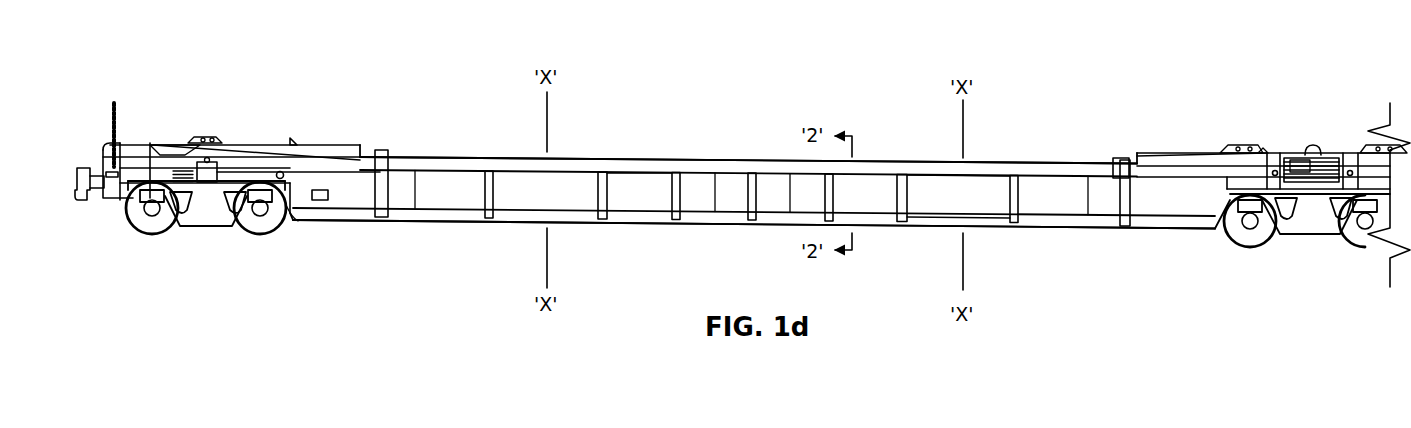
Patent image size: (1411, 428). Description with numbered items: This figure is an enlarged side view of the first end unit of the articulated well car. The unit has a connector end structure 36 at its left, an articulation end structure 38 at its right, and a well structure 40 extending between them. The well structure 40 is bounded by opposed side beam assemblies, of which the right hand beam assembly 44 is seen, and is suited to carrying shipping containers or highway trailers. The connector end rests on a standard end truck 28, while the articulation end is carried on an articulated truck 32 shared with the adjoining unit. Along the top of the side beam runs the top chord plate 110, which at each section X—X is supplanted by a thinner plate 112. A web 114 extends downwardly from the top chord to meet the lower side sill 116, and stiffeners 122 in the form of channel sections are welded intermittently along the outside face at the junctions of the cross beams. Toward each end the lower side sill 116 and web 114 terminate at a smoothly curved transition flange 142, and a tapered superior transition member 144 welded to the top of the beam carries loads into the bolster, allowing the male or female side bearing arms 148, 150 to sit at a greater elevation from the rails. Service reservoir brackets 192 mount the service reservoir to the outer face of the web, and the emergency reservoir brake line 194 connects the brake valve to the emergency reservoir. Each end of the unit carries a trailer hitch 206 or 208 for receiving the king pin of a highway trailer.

The connector end structure 36 is at (222, 85).
The articulation end structure 38 is at (1196, 133).
The well structure 40 is at (770, 157).
The right hand beam assembly 44 is at (636, 201).
The standard end truck 28 is at (212, 230).
The articulated truck 32 is at (1302, 238).
The top chord plate 110 is at (655, 157).
The thinner plate 112 is at (471, 157).
The web 114 is at (965, 201).
The lower side sill 116 is at (344, 220).
The stiffeners 122 is at (910, 204).
The transition flange 142 is at (285, 219).
The superior transition member 144 is at (172, 143).
The male side bearing arm 148 is at (1298, 158).
The female side bearing arm 150 is at (1325, 158).
The service reservoir brackets 192 is at (108, 199).
The emergency reservoir brake line 194 is at (197, 170).
The trailer hitch 206 is at (229, 131).
The trailer hitch 208 is at (1265, 143).